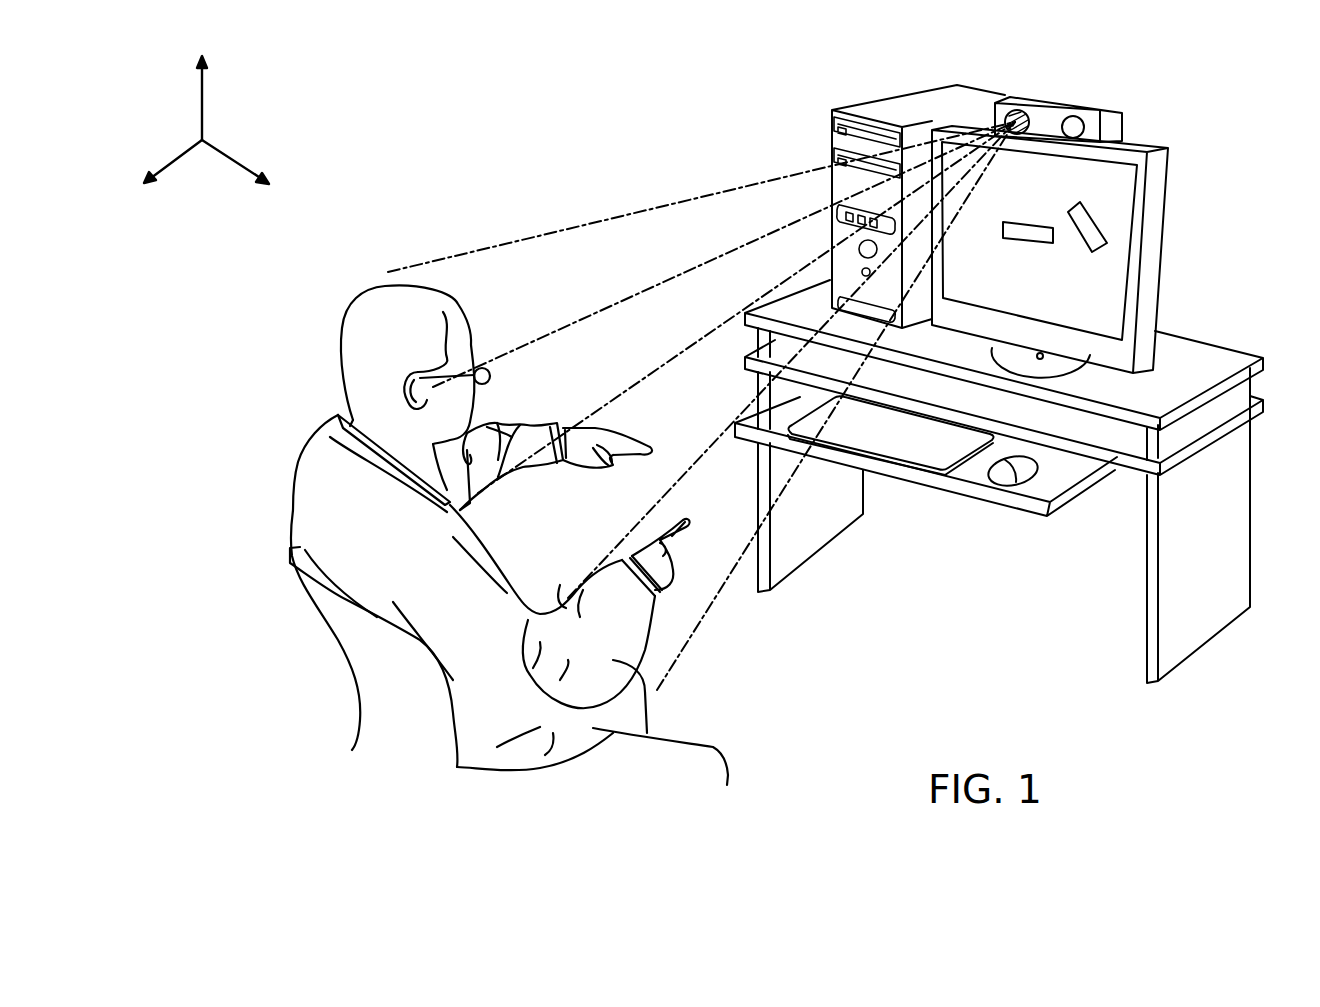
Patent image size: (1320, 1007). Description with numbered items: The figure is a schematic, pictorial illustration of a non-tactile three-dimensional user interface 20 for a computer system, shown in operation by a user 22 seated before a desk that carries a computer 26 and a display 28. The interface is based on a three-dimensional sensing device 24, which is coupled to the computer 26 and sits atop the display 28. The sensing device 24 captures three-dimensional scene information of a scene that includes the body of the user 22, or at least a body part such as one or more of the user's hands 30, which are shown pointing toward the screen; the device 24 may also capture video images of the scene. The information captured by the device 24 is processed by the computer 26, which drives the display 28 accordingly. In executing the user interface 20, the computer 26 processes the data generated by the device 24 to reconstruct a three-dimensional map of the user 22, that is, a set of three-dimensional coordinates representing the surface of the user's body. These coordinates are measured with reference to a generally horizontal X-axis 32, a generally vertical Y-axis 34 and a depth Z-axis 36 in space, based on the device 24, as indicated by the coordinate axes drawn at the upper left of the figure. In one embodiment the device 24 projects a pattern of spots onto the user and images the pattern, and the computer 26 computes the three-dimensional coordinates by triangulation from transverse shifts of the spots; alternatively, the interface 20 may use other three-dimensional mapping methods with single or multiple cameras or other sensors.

The non-tactile 3D user interface 20 is at (451, 196).
The user 22 is at (340, 324).
The 3D sensing device 24 is at (1125, 118).
The computer 26 is at (886, 105).
The display 28 is at (1170, 233).
The hands 30 is at (603, 478).
The X-axis 32 is at (240, 168).
The Y-axis 34 is at (202, 99).
The Z-axis 36 is at (160, 168).